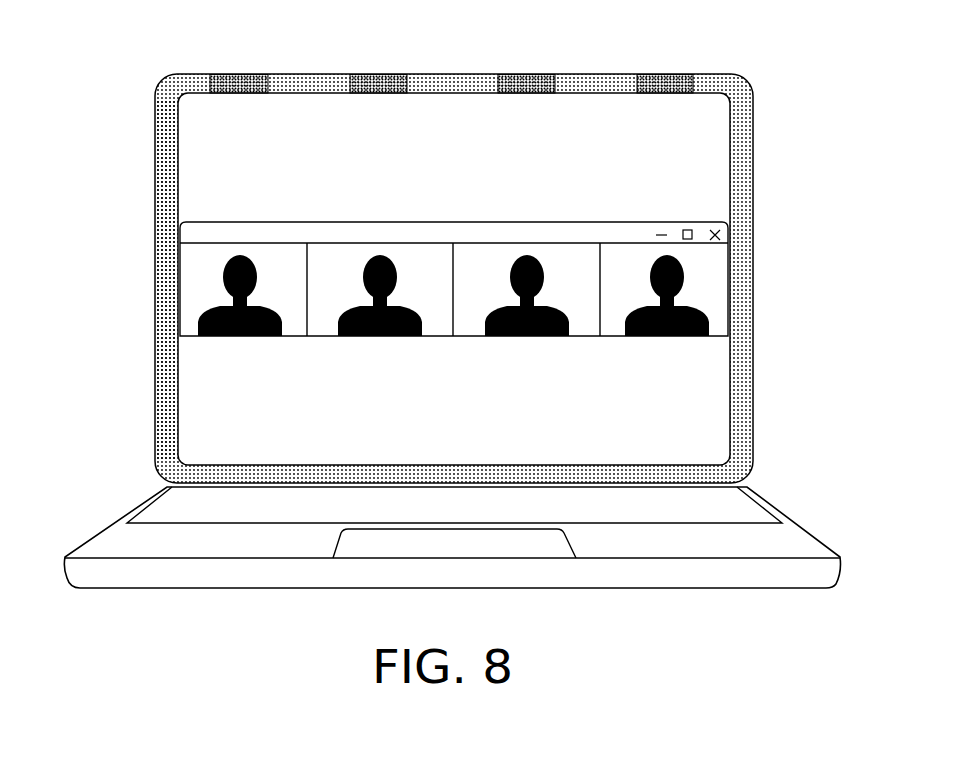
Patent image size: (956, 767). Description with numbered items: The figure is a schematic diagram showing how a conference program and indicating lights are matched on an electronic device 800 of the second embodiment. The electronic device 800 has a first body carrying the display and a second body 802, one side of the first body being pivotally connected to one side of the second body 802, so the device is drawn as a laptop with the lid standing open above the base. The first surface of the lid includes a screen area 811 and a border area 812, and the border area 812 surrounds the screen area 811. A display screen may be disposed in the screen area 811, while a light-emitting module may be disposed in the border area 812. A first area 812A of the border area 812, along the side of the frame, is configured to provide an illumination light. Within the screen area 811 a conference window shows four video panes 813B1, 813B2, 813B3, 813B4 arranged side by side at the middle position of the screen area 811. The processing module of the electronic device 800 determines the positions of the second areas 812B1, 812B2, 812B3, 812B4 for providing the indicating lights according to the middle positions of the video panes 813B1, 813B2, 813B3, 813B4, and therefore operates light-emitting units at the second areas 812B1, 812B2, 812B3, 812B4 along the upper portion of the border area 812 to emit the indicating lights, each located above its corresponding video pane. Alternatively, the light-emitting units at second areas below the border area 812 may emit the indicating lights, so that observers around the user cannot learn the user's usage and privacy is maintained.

The electronic device 800 is at (437, 328).
The second body 802 is at (135, 493).
The screen area 811 is at (716, 194).
The border area 812 is at (740, 247).
The first area 812A is at (167, 135).
The second area 812B1 is at (245, 90).
The second area 812B2 is at (381, 88).
The second area 812B3 is at (525, 88).
The second area 812B4 is at (663, 88).
The video pane 813B1 is at (243, 340).
The video pane 813B2 is at (383, 340).
The video pane 813B3 is at (530, 340).
The video pane 813B4 is at (670, 340).